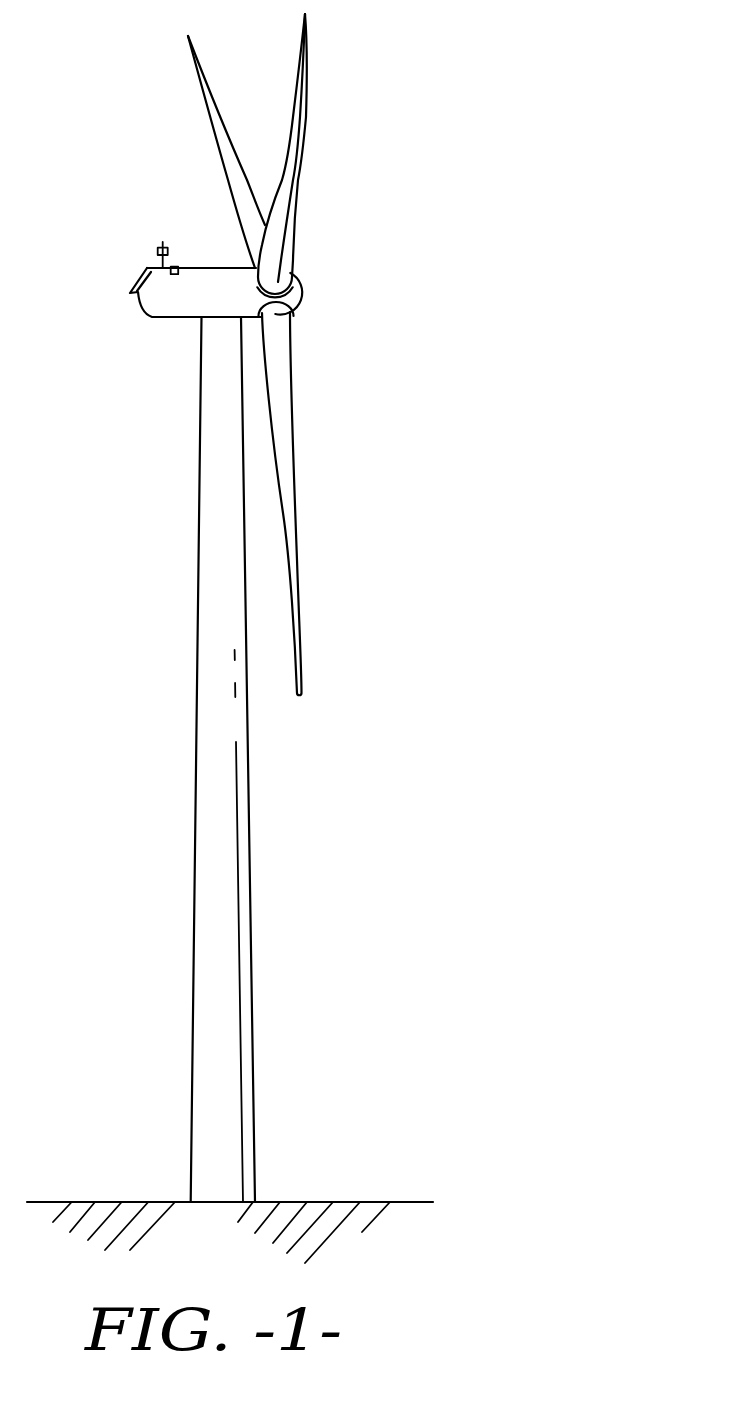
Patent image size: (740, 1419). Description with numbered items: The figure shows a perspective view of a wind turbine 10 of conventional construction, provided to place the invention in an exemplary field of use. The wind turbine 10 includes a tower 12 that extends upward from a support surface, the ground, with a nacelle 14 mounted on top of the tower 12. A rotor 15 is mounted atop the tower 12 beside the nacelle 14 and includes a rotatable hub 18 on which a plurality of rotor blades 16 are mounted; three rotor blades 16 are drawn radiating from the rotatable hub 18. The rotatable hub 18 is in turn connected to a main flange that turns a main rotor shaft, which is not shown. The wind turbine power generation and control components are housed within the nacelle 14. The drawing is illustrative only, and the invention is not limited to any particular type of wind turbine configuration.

The wind turbine 10 is at (407, 100).
The tower 12 is at (208, 882).
The nacelle 14 is at (177, 320).
The rotor 15 is at (305, 314).
The rotor blades 16 is at (210, 117).
The rotatable hub 18 is at (303, 293).